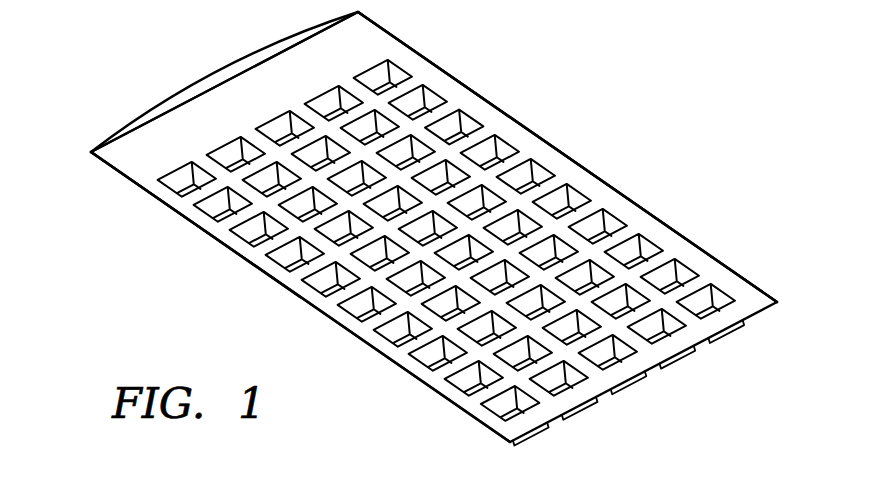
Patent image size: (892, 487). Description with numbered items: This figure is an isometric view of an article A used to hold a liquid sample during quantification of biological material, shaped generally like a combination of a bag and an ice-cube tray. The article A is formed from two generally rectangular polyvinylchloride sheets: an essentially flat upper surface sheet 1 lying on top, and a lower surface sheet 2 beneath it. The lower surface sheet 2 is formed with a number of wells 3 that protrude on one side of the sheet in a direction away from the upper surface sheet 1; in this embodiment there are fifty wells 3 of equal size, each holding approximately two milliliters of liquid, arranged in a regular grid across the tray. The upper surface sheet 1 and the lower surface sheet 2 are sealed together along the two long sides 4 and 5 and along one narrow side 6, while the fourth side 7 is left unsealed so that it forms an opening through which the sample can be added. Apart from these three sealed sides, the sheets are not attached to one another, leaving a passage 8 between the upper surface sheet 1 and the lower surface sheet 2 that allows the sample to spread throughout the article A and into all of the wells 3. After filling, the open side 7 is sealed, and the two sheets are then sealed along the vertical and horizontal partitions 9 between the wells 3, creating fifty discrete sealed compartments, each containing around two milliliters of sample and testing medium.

The upper surface sheet 1 is at (440, 394).
The lower surface sheet 2 is at (408, 46).
The wells 3 is at (523, 410).
The long side 4 is at (597, 176).
The long side 5 is at (297, 300).
The narrow side 6 is at (653, 370).
The fourth side 7 is at (212, 78).
The passage 8 is at (152, 142).
The partitions 9 is at (440, 141).
The Article A is at (183, 217).